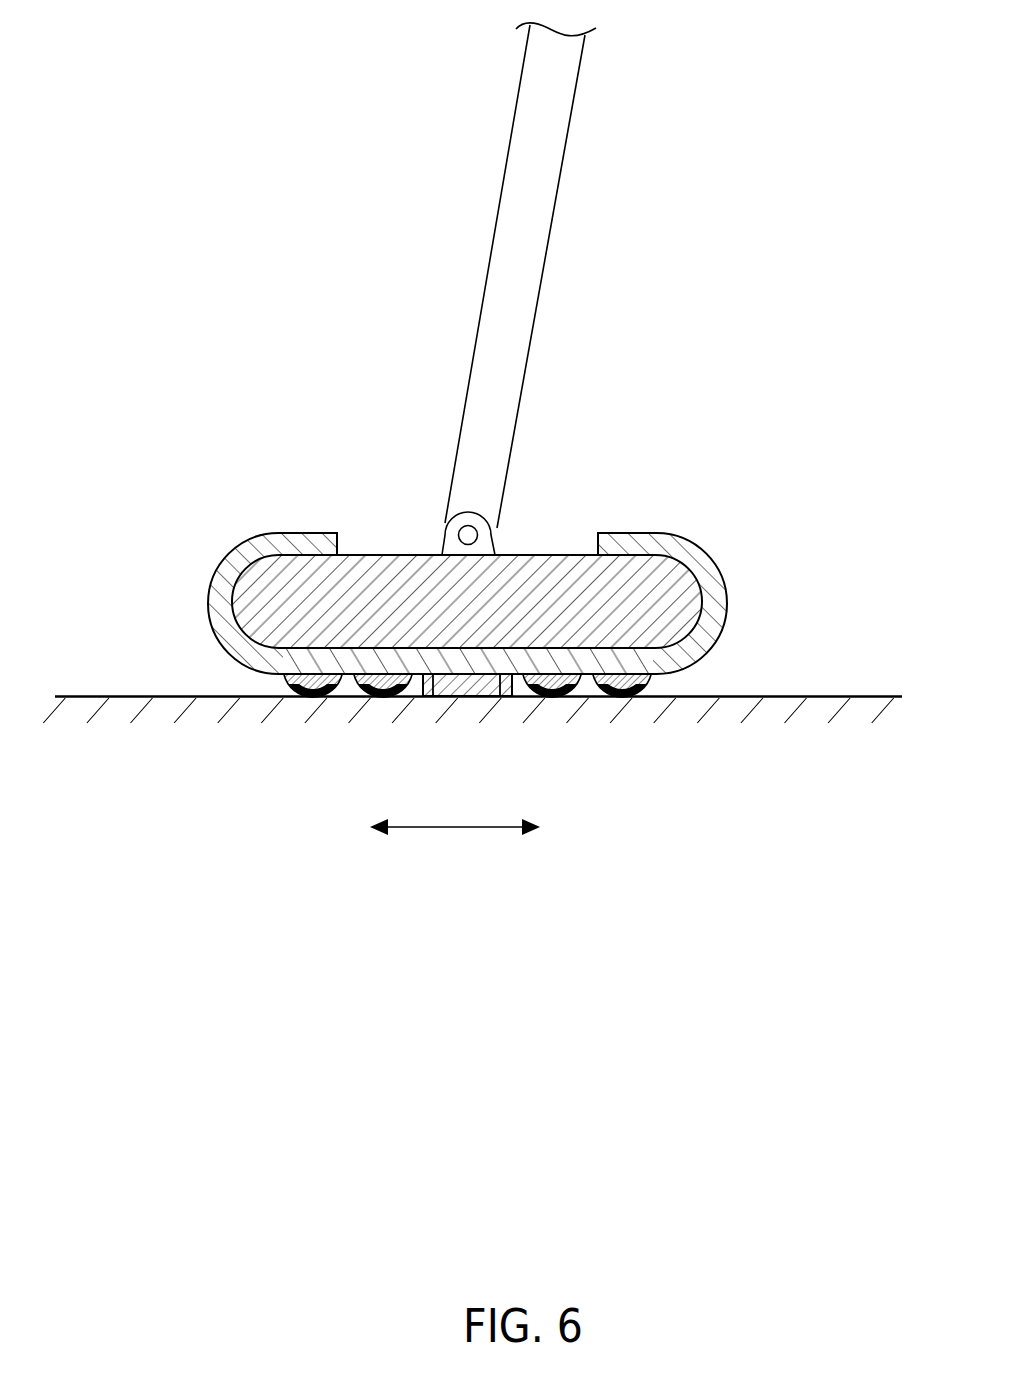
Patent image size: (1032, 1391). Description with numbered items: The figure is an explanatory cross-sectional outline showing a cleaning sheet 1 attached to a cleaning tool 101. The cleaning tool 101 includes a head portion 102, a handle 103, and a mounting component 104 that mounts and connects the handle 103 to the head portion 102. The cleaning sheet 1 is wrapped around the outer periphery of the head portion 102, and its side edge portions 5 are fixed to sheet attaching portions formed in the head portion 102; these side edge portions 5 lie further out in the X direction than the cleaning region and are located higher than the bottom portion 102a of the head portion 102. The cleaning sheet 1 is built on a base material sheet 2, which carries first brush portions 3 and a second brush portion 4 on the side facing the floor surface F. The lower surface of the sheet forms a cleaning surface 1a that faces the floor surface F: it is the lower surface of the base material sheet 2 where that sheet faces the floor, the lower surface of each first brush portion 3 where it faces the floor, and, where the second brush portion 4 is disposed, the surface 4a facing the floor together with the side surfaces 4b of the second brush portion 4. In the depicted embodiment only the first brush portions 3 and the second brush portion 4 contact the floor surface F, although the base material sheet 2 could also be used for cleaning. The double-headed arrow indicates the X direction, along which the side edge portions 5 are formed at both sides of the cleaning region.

The cleaning sheet 1 is at (448, 604).
The cleaning surface 1a is at (591, 698).
The base material sheet 2 is at (223, 565).
The first brush portions 3 is at (297, 698).
The second brush portion 4 is at (465, 730).
The surface of the second brush portion 4a is at (488, 698).
The side surfaces of the second brush portion 4b is at (465, 730).
The side edge portions 5 is at (262, 534).
The cleaning tool 101 is at (536, 289).
The head portion 102 is at (389, 567).
The bottom portion 102a is at (296, 650).
The handle 103 is at (520, 335).
The mounting component 104 is at (476, 534).
The floor surface F is at (807, 696).
The X direction X is at (466, 826).